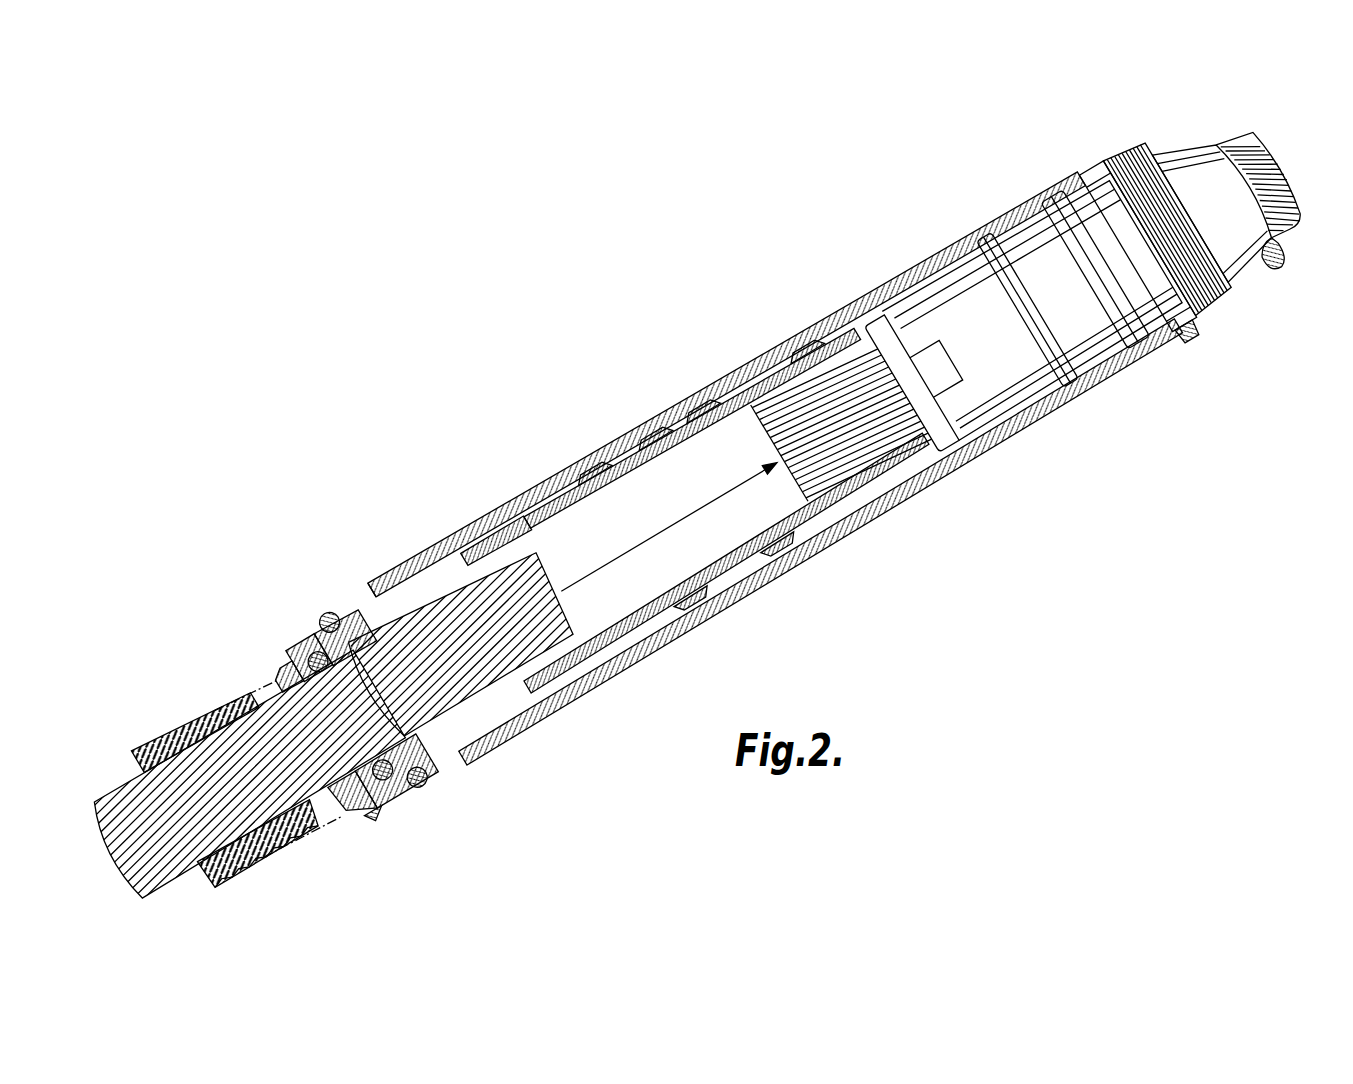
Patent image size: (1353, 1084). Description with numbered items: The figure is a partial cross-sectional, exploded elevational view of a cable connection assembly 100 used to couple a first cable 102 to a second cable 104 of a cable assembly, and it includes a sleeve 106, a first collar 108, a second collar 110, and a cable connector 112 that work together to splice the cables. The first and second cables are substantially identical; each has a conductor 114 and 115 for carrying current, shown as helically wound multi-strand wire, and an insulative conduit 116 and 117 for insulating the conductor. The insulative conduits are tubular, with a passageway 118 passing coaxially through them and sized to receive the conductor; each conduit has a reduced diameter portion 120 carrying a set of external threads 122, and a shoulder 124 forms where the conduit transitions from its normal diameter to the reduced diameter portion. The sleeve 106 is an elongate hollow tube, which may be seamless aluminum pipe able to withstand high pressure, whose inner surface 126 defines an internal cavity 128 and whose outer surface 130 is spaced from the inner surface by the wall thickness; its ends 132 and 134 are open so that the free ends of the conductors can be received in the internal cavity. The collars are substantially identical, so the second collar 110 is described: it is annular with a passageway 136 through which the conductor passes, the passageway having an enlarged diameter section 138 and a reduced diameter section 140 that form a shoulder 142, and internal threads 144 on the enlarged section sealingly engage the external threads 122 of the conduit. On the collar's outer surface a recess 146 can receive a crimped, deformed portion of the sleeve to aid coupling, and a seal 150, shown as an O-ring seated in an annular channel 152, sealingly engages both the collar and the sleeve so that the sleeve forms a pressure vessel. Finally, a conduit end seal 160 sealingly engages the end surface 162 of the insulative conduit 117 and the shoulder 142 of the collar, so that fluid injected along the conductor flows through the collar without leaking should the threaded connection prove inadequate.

The cable connection assembly 100 is at (1062, 612).
The first cable 102 is at (1238, 322).
The second cable 104 is at (218, 678).
The sleeve 106 is at (856, 292).
The first collar 108 is at (1072, 185).
The second collar 110 is at (305, 630).
The cable connector 112 is at (682, 450).
The conductor 114 is at (863, 492).
The conductor 115 is at (320, 805).
The insulative conduit 116 is at (1182, 155).
The insulative conduit 117 is at (150, 745).
The passageway 118 is at (235, 880).
The reduced diameter portion 120 is at (1205, 308).
The external threads 122 is at (1125, 182).
The shoulder 124 is at (265, 865).
The inner surface 126 is at (455, 555).
The internal cavity 128 is at (610, 475).
The outer surface 130 is at (495, 530).
The end 132 is at (1190, 338).
The end 134 is at (370, 592).
The passageway 136 is at (285, 690).
The enlarged diameter section 138 is at (318, 640).
The reduced diameter section 140 is at (352, 630).
The shoulder 142 is at (395, 800).
The internal threads 144 is at (355, 810).
The recess 146 is at (292, 650).
The seal 150 is at (425, 800).
The annular channel 152 is at (442, 782).
The conduit end seal 160 is at (375, 820).
The end surface 162 is at (265, 683).